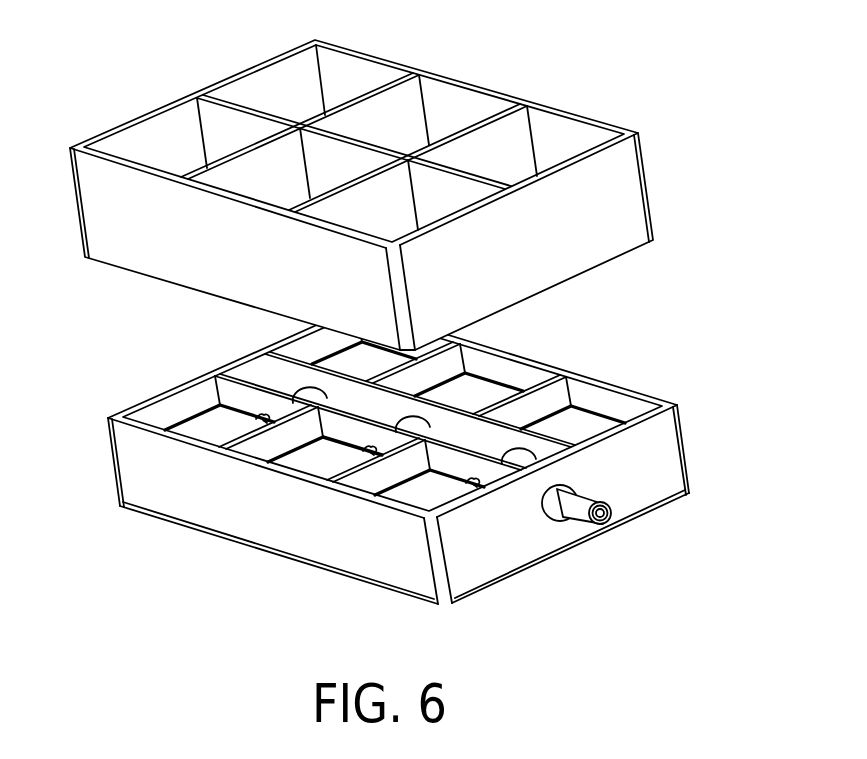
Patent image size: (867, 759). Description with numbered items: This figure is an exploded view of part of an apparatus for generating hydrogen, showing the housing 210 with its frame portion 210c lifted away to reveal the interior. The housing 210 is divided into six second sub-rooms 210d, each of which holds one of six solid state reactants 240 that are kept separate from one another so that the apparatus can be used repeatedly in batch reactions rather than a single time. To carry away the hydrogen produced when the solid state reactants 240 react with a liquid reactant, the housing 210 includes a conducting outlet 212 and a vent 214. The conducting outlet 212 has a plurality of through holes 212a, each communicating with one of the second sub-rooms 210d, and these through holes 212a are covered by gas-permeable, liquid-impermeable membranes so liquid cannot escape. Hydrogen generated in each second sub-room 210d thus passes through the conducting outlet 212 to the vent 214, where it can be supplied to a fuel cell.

The housing 210 is at (672, 473).
The upper cover frame 210c is at (559, 142).
The second sub-rooms 210d is at (620, 416).
The conducting outlet 212 is at (463, 437).
The through holes 212a is at (517, 459).
The vent 214 is at (603, 515).
The solid state reactants 240 is at (585, 428).